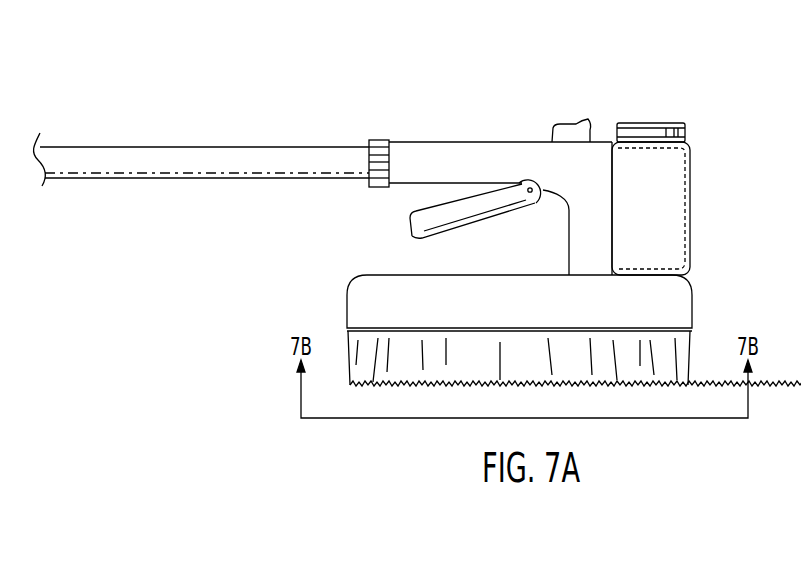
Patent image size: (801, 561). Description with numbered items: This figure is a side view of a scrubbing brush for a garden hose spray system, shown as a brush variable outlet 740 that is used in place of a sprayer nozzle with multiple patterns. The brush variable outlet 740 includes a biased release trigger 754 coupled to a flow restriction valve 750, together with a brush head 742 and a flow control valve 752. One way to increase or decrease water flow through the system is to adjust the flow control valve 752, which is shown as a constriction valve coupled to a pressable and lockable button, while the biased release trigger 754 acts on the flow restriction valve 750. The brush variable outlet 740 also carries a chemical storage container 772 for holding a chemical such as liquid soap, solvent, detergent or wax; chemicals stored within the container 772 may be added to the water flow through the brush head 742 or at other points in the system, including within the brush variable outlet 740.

The brush variable outlet 740 is at (608, 217).
The brush head 742 is at (597, 315).
The flow restriction valve 750 is at (542, 172).
The flow control valve 752 is at (580, 175).
The biased release trigger 754 is at (413, 221).
The chemical storage container 772 is at (668, 210).